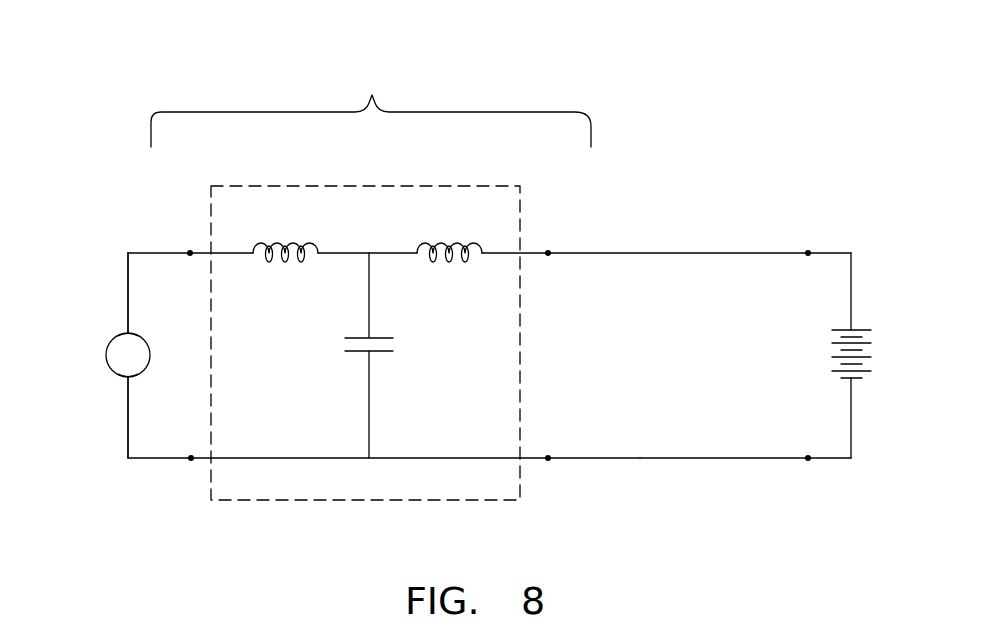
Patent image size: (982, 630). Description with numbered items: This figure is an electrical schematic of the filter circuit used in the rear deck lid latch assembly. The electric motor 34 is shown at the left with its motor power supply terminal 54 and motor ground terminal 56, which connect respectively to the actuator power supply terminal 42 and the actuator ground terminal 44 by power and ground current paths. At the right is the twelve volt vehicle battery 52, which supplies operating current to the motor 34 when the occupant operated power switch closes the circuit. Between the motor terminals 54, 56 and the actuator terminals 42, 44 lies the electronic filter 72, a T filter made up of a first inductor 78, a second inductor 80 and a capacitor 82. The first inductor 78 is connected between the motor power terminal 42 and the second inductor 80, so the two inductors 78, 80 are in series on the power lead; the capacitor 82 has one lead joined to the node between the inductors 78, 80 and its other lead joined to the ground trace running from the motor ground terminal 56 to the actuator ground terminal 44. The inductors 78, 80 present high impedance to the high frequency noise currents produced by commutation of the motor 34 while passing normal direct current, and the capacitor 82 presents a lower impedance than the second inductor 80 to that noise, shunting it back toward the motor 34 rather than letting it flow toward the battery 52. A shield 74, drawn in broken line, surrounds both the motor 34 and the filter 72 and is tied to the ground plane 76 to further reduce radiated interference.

The electronic filter 72 is at (373, 78).
The first inductor 78 is at (258, 243).
The second inductor 80 is at (482, 243).
The capacitor 82 is at (360, 353).
The shield 74 is at (520, 283).
The actuator power supply terminal 42 is at (128, 273).
The actuator ground terminal 44 is at (128, 437).
The electric motor 34 is at (112, 352).
The motor power supply terminal 54 is at (128, 333).
The motor ground terminal 56 is at (128, 378).
The vehicle battery 52 is at (857, 330).
The ground plane 76 is at (745, 494).